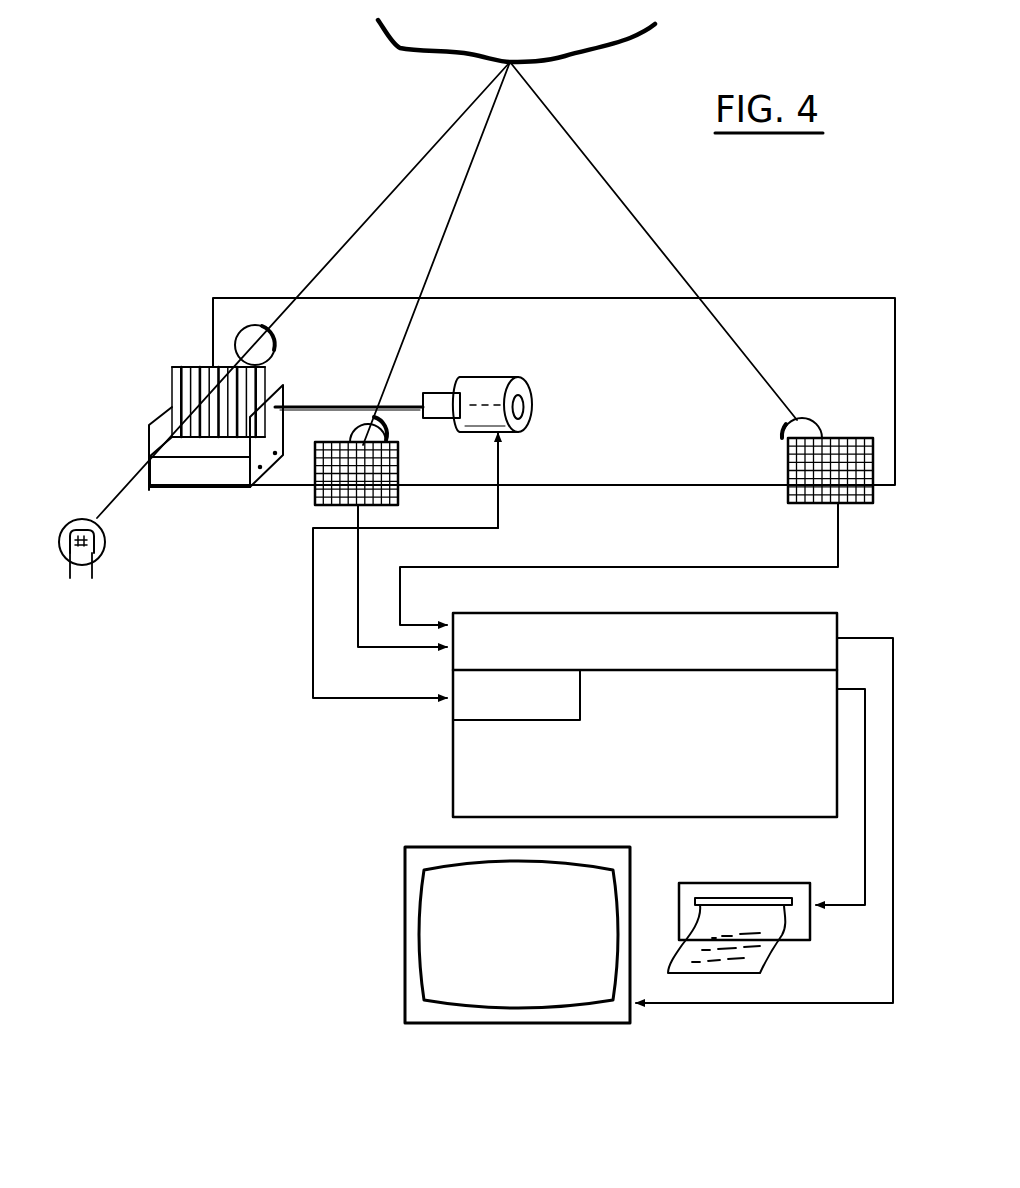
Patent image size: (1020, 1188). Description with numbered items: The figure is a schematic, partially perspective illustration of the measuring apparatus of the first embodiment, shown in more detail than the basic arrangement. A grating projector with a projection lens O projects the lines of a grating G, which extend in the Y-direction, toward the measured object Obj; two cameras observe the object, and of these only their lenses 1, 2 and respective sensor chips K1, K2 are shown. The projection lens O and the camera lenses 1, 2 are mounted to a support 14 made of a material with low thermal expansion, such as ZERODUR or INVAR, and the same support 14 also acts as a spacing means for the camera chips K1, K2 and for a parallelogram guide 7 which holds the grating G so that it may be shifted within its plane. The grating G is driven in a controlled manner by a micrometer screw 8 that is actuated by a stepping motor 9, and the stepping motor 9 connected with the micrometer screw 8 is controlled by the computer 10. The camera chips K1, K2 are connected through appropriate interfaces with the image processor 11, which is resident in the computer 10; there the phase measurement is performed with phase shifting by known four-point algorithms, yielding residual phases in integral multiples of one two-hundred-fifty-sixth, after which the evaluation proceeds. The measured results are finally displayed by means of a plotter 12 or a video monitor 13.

The measured object Obj is at (577, 52).
The support 14 is at (807, 298).
The grating G is at (172, 378).
The parallelogram guide 7 is at (276, 423).
The projection lens O is at (275, 343).
The micrometer screw 8 is at (337, 403).
The stepping motor 9 is at (518, 382).
The camera sensor K1 is at (318, 497).
The camera lens 1 is at (388, 430).
The camera sensor K2 is at (845, 494).
The camera lens 2 is at (813, 422).
The computer 10 is at (460, 762).
The image processor 11 is at (820, 628).
The plotter 12 is at (745, 882).
The video monitor 13 is at (405, 988).